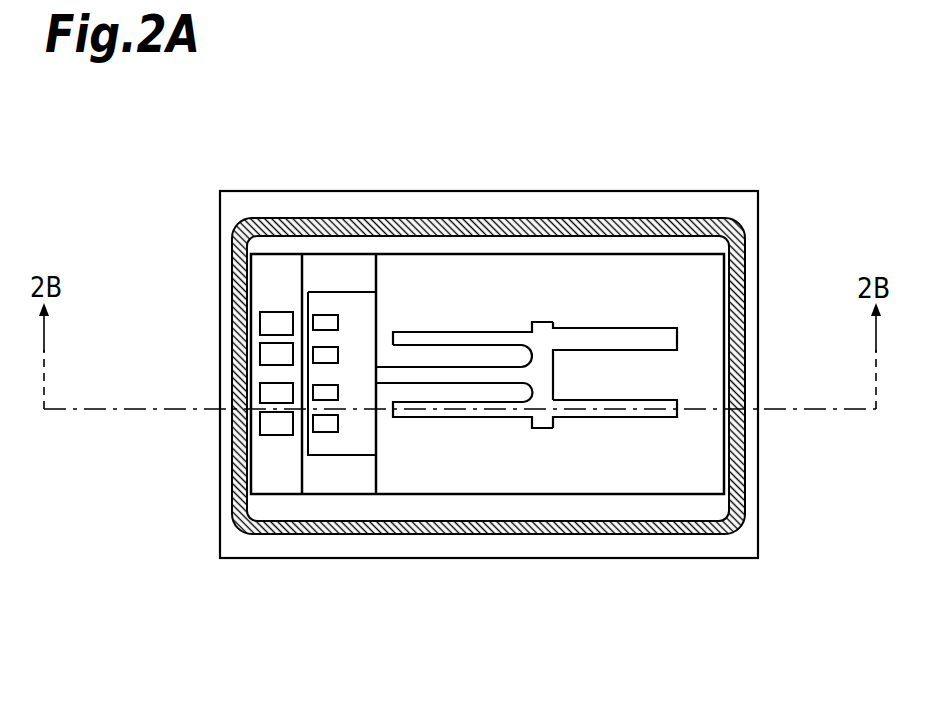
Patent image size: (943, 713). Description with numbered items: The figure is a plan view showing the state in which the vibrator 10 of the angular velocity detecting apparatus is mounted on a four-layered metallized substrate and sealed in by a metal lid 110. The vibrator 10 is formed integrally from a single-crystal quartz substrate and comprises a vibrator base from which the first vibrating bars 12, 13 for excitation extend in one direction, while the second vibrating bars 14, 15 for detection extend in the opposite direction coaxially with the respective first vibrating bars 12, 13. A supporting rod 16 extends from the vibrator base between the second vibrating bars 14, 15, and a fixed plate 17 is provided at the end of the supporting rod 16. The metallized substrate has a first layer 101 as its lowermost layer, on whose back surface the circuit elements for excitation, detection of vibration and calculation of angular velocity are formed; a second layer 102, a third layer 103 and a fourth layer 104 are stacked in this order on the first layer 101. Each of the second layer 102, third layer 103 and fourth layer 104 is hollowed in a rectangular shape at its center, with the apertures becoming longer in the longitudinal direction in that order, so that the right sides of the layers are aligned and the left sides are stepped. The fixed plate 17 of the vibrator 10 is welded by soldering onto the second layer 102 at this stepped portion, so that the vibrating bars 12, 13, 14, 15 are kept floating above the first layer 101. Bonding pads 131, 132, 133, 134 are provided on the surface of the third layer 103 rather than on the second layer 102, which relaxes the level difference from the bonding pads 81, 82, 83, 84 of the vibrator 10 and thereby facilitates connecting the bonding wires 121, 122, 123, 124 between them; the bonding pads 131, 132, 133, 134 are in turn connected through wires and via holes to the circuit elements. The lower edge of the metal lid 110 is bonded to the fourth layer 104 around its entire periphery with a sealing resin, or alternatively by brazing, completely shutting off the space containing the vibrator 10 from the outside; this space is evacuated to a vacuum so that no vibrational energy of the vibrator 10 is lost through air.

The vibrator 10 is at (540, 376).
The first vibrating bar 12 is at (657, 337).
The first vibrating bar 13 is at (657, 418).
The second vibrating bar 14 is at (517, 333).
The second vibrating bar 15 is at (510, 417).
The supporting rod 16 is at (480, 382).
The fixed plate 17 is at (270, 320).
The bonding pad 81 is at (335, 322).
The bonding pad 82 is at (335, 352).
The bonding pad 83 is at (335, 392).
The bonding pad 84 is at (335, 425).
The first layer 101 is at (720, 360).
The second layer 102 is at (358, 485).
The third layer 103 is at (275, 485).
The fourth layer 104 is at (743, 545).
The metal lid 110 is at (575, 217).
The bonding wire 121 is at (323, 315).
The bonding wire 122 is at (327, 353).
The bonding wire 123 is at (327, 391).
The bonding wire 124 is at (320, 430).
The bonding pad 131 is at (280, 323).
The bonding pad 132 is at (280, 356).
The bonding pad 133 is at (280, 393).
The bonding pad 134 is at (280, 425).